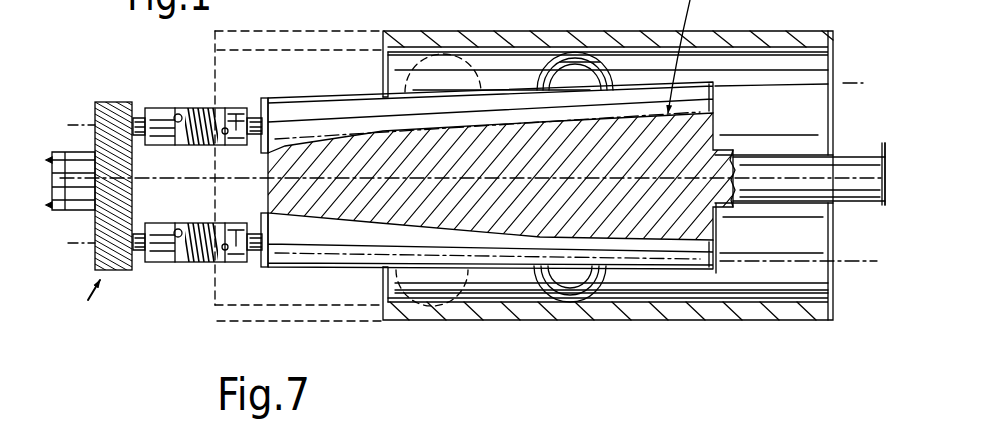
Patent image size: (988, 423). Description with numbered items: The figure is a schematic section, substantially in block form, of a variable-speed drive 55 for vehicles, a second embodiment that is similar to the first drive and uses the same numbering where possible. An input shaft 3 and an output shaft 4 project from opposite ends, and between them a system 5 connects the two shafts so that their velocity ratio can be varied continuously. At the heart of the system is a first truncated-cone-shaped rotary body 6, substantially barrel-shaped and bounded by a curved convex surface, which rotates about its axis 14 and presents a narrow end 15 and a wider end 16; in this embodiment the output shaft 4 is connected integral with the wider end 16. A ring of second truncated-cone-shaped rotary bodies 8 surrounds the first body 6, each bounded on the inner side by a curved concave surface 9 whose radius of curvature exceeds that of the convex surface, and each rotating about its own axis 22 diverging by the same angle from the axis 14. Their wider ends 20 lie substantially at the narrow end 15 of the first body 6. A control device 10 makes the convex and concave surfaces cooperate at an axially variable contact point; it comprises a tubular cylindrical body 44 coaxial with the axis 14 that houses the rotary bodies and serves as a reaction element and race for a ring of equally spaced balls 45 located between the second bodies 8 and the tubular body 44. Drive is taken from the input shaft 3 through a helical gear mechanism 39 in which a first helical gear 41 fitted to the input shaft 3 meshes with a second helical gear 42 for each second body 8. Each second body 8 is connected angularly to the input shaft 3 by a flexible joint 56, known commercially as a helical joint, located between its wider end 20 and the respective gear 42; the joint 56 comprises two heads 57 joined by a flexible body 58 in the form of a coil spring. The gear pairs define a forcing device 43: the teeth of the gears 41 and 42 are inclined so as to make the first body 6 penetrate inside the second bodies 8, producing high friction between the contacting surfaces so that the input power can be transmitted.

The input shaft 3 is at (63, 159).
The output shaft 4 is at (861, 173).
The system for connecting the shafts 5 is at (488, 80).
The first truncated-cone-shaped rotary body 6 is at (718, 130).
The second truncated-cone-shaped rotary bodies 8 is at (284, 108).
The curved concave surface 9 is at (321, 96).
The control device 10 is at (549, 62).
The axis of first rotary body 14 is at (850, 203).
The narrow end of first rotary body 15 is at (257, 176).
The wider end of first rotary body 16 is at (731, 136).
The wider ends of second rotary bodies 20 is at (258, 99).
The axes of second rotary bodies 22 is at (846, 82).
The helical gear mechanism 39 is at (79, 305).
The first helical gear 41 is at (92, 236).
The second helical gear 42 is at (110, 100).
The device for forcing second bodies against first body 43 is at (90, 246).
The tubular cylindrical body 44 is at (424, 40).
The balls 45 is at (573, 62).
The variable-speed drive 55 is at (735, 333).
The flexible joint 56 is at (146, 106).
The heads 57 is at (162, 117).
The flexible body 58 is at (200, 105).